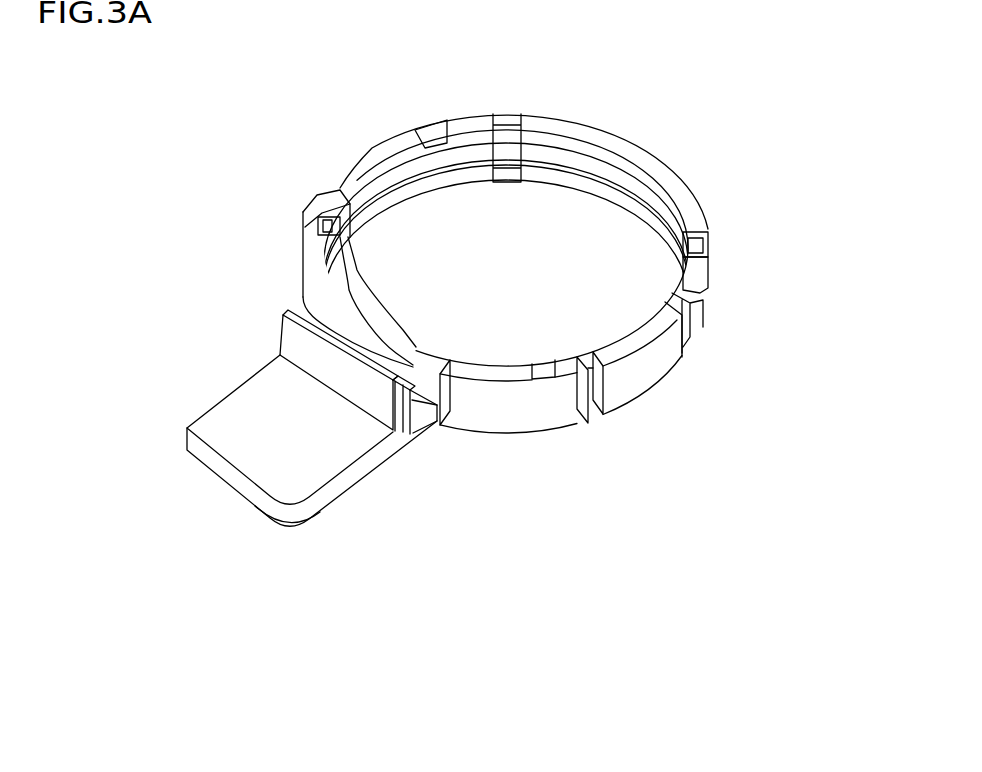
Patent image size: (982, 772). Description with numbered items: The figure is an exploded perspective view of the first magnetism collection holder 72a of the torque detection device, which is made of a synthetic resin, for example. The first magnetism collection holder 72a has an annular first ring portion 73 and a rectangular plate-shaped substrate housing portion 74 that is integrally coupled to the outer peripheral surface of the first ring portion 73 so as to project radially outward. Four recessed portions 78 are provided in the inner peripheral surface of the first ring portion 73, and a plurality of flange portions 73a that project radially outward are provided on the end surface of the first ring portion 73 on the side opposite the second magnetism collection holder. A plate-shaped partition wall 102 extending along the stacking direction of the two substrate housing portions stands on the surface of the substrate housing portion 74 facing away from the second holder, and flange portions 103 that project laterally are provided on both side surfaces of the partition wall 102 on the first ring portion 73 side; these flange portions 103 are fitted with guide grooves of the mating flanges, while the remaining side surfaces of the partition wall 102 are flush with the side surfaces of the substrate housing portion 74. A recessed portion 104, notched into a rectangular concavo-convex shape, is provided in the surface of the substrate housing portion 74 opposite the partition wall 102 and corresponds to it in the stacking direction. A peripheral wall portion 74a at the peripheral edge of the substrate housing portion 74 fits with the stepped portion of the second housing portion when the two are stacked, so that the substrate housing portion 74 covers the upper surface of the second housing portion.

The first magnetism collection holder 72a is at (708, 85).
The first ring portion 73 is at (573, 415).
The flange portions 73a is at (537, 113).
The recessed portions 78 is at (511, 162).
The partition wall 102 is at (297, 339).
The flange portions 103 is at (297, 304).
The recessed portion 104 is at (410, 434).
The substrate housing portion 74 is at (300, 475).
The peripheral wall portion 74a is at (247, 488).